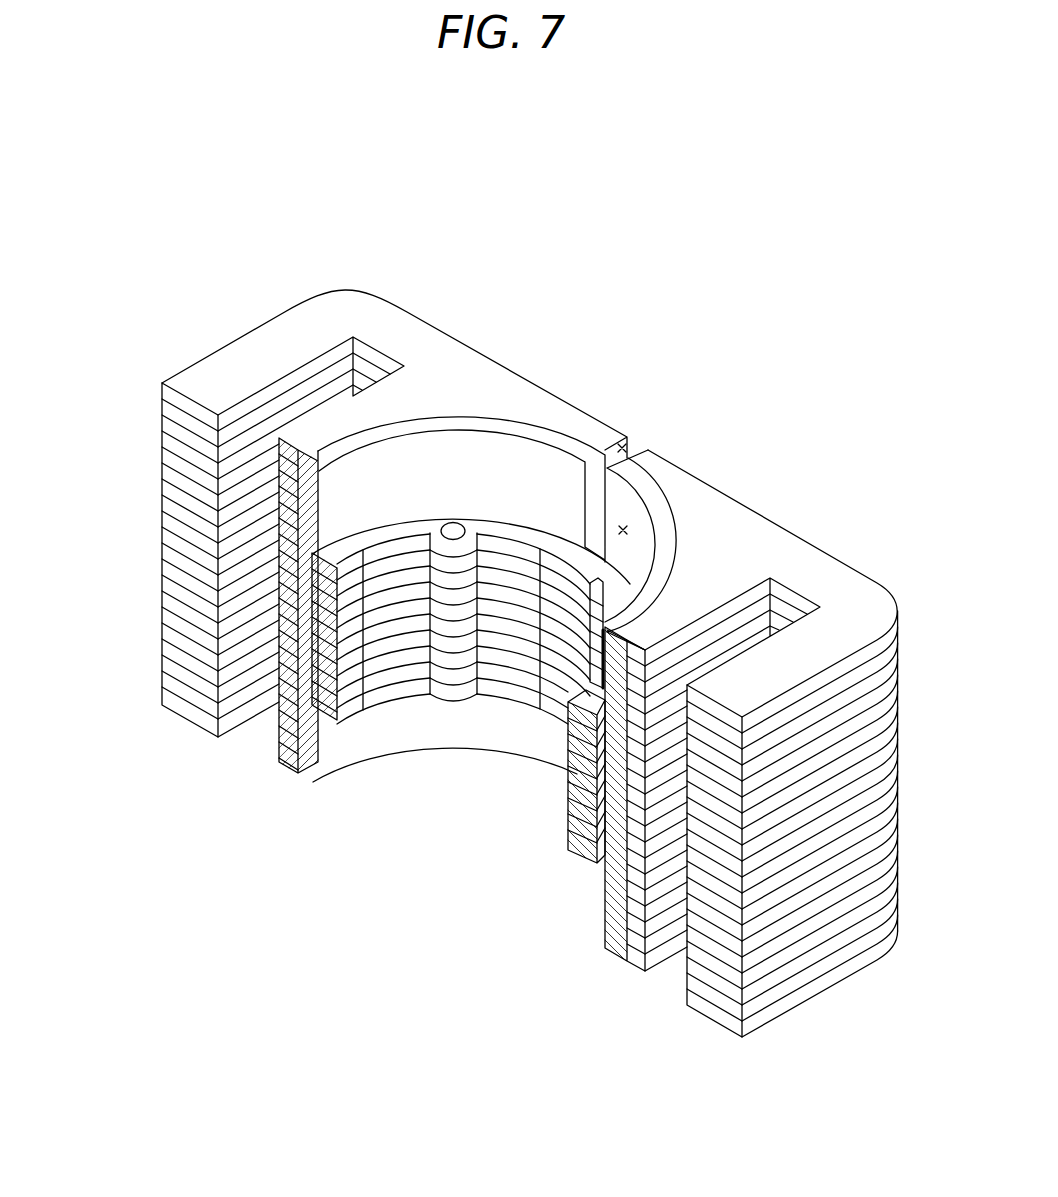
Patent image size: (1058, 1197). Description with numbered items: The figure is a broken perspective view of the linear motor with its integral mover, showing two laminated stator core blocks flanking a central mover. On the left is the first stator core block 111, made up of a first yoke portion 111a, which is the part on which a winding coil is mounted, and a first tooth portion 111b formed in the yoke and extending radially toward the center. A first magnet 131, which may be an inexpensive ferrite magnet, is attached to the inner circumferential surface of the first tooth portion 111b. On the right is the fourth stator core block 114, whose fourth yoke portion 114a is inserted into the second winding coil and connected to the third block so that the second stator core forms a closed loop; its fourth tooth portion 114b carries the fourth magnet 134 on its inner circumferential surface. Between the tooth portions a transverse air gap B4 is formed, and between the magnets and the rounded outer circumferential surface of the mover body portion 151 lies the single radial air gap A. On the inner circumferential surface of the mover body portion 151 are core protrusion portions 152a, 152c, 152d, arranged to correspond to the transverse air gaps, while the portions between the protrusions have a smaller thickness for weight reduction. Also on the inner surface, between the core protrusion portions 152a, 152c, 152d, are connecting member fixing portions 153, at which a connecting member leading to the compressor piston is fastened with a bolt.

The first stator core block 111 is at (342, 483).
The first yoke portion 111a is at (170, 462).
The first tooth portion 111b is at (466, 383).
The first magnet 131 is at (528, 428).
The transverse air gap B4 is at (624, 446).
The radial air gap A is at (624, 528).
The fourth magnet 134 is at (667, 540).
The fourth stator core block 114 is at (774, 757).
The fourth yoke portion 114a is at (833, 935).
The fourth tooth portion 114b is at (730, 547).
The mover body portion 151 is at (507, 660).
The connecting member fixing portion 153 is at (448, 678).
The core protrusion portion 152a is at (350, 695).
The core protrusion portion 152c is at (583, 842).
The core protrusion portion 152d is at (563, 672).